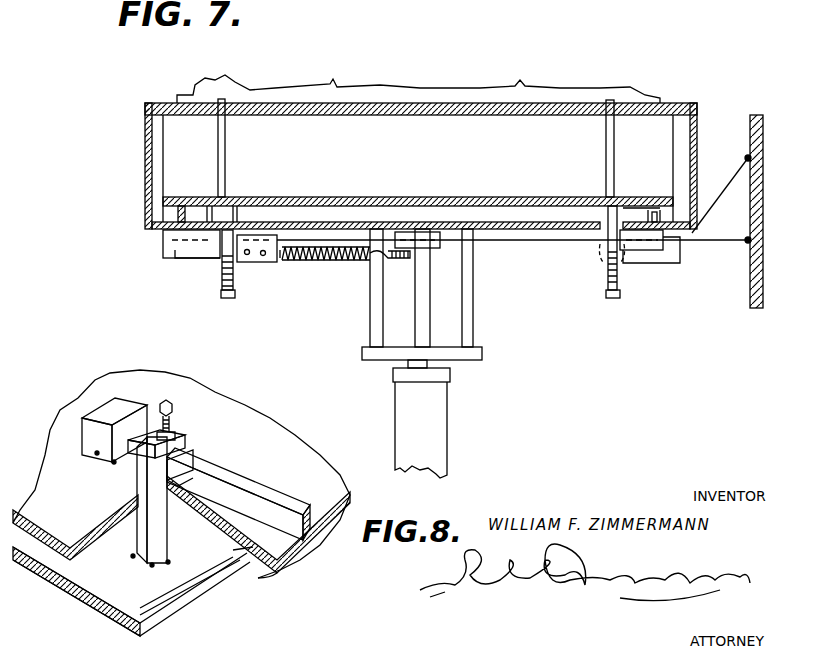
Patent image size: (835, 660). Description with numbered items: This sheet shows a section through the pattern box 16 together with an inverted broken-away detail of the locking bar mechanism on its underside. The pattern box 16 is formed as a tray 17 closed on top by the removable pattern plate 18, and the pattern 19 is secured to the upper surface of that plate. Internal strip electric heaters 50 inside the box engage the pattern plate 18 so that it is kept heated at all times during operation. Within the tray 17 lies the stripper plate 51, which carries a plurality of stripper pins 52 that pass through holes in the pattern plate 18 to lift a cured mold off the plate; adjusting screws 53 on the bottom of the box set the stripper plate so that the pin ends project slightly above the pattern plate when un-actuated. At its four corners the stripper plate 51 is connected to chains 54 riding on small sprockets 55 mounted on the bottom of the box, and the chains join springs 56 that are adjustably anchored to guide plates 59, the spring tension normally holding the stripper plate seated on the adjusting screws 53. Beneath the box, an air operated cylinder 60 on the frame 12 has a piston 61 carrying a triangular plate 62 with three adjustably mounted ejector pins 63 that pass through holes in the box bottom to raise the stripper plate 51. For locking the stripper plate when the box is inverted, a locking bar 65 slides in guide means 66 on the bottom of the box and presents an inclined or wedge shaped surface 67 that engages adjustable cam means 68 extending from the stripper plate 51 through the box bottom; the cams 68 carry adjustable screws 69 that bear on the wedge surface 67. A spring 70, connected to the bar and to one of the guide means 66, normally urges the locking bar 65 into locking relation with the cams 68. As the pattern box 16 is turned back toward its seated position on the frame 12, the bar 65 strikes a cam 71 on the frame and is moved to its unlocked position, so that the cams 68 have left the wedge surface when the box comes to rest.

In FIG. 7, the frame 12 is at (760, 190).
In FIG. 7, the pattern box 16 is at (418, 162).
In FIG. 7, the tray 17 is at (146, 174).
In FIG. 7, the pattern plate 18 is at (447, 109).
In FIG. 7, the pattern 19 is at (568, 97).
In FIG. 7, the strip electric heaters 50 is at (160, 145).
In FIG. 7, the stripper plate 51 is at (540, 202).
In FIG. 8, the stripper plate 51 is at (200, 582).
In FIG. 7, the stripper pins 52 is at (226, 168).
In FIG. 7, the adjusting screws 53 is at (150, 227).
In FIG. 7, the chains 54 is at (212, 216).
In FIG. 7, the sprockets 55 is at (210, 262).
In FIG. 7, the springs 56 is at (321, 263).
In FIG. 7, the guide plates 59 is at (255, 263).
In FIG. 7, the air operated cylinder 60 is at (442, 412).
In FIG. 7, the piston 61 is at (402, 362).
In FIG. 7, the triangular plate 62 is at (478, 360).
In FIG. 7, the ejector pins 63 is at (370, 315).
In FIG. 7, the locking bar 65 is at (681, 246).
In FIG. 8, the locking bar 65 is at (238, 494).
In FIG. 7, the guide means 66 is at (407, 262).
In FIG. 8, the guide means 66 is at (95, 450).
In FIG. 8, the wedge shaped surface 67 is at (190, 465).
In FIG. 7, the adjustable cam means 68 is at (237, 272).
In FIG. 8, the adjustable cam means 68 is at (180, 448).
In FIG. 7, the adjustable screws 69 is at (228, 300).
In FIG. 8, the adjustable screws 69 is at (174, 412).
In FIG. 7, the spring 70 is at (378, 262).
In FIG. 7, the cam 71 is at (727, 197).